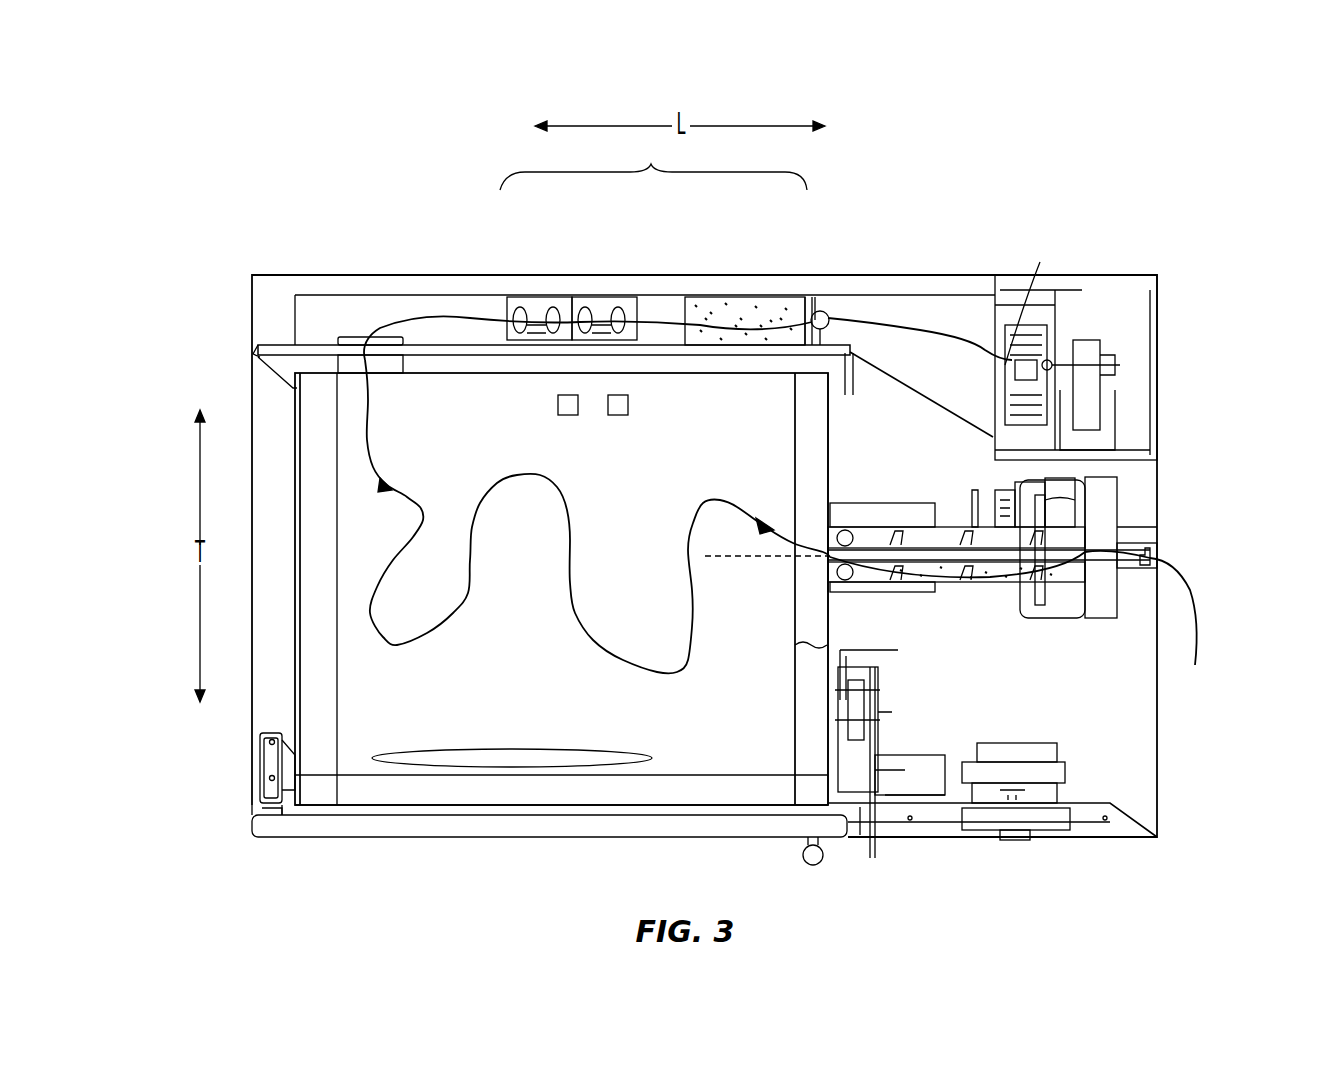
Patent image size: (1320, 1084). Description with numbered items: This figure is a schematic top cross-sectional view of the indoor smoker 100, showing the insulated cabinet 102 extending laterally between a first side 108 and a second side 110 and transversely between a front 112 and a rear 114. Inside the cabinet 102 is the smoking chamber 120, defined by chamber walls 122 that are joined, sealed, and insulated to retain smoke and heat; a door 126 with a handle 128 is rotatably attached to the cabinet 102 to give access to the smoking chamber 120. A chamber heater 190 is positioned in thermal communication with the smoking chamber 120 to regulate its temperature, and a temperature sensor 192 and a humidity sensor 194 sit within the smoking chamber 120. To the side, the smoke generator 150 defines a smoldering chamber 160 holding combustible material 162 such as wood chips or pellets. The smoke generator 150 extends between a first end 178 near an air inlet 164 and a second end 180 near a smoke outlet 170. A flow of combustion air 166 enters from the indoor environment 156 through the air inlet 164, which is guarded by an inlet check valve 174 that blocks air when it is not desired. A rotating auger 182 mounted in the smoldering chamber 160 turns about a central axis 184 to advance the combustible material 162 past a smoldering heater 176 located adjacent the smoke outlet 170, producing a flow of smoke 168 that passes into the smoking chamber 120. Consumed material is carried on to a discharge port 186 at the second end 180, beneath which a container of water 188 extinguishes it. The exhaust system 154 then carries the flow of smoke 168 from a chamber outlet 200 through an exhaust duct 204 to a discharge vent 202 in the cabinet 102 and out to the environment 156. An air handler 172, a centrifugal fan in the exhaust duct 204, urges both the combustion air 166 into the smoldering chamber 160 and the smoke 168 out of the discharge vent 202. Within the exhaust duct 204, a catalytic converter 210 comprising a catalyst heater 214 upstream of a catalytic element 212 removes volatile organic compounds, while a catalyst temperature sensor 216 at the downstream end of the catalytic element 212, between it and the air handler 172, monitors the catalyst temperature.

The indoor smoker 100 is at (325, 102).
The insulated cabinet 102 is at (250, 292).
The first side 108 is at (245, 770).
The second side 110 is at (1168, 790).
The front 112 is at (360, 850).
The rear 114 is at (283, 272).
The smoking chamber 120 is at (525, 681).
The chamber walls 122 is at (305, 690).
The door 126 is at (460, 840).
The handle 128 is at (822, 862).
The smoke generator 150 is at (953, 640).
The exhaust system 154 is at (947, 240).
The indoor environment 156 is at (1143, 92).
The smoldering chamber 160 is at (938, 530).
The combustible material 162 is at (990, 580).
The air inlet 164 is at (1138, 540).
The flow of combustion air 166 is at (1195, 608).
The flow of smoke 168 is at (722, 498).
The smoke outlet 170 is at (820, 557).
The air handler 172 is at (1065, 330).
The inlet check valve 174 is at (1155, 555).
The smoldering heater 176 is at (828, 590).
The first end 178 is at (1128, 488).
The second end 180 is at (820, 523).
The rotating auger 182 is at (892, 525).
The central axis 184 is at (735, 556).
The discharge port 186 is at (820, 582).
The container of water 188 is at (800, 690).
The chamber heater 190 is at (537, 750).
The temperature sensor 192 is at (569, 417).
The humidity sensor 194 is at (619, 417).
The chamber outlet 200 is at (408, 378).
The discharge vent 202 is at (1096, 327).
The exhaust duct 204 is at (408, 305).
The catalytic converter 210 is at (704, 241).
The catalytic element 212 is at (757, 300).
The catalyst heater 214 is at (587, 298).
The catalyst temperature sensor 216 is at (825, 315).